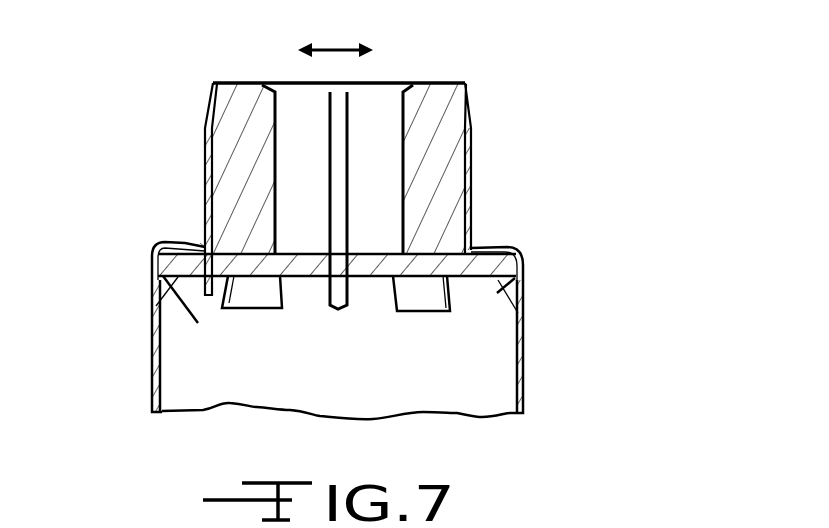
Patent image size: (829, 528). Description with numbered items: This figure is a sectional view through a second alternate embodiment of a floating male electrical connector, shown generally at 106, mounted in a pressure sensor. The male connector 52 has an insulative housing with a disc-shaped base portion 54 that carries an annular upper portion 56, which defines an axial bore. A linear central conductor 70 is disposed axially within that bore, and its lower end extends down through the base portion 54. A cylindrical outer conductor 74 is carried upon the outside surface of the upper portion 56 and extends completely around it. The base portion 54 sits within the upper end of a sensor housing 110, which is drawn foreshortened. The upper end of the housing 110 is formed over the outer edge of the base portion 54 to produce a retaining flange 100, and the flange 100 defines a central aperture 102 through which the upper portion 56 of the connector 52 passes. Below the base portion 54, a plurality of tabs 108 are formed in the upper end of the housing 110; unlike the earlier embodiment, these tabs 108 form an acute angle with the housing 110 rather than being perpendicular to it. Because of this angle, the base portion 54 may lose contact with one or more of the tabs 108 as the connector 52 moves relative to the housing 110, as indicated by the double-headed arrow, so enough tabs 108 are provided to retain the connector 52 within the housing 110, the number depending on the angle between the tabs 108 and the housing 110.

The floating male electrical connector 52 is at (502, 100).
The base portion 54 is at (490, 267).
The annular upper portion 56 is at (425, 97).
The central conductor 70 is at (345, 306).
The outer conductor 74 is at (472, 171).
The retaining flange 100 is at (162, 240).
The central aperture 102 is at (181, 214).
The male connector embodiment 106 is at (585, 129).
The tabs 108 is at (175, 287).
The sensor housing 110 is at (523, 360).